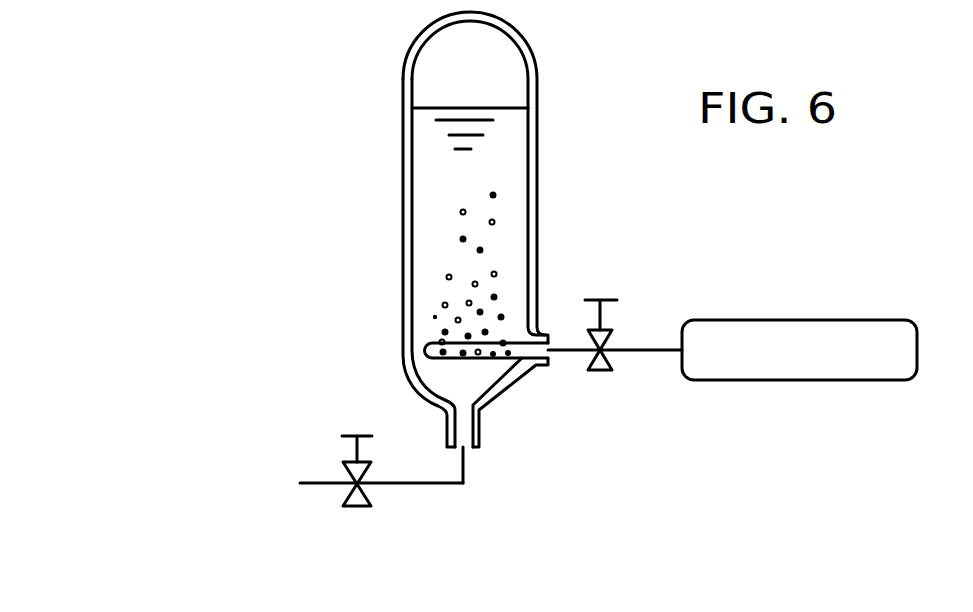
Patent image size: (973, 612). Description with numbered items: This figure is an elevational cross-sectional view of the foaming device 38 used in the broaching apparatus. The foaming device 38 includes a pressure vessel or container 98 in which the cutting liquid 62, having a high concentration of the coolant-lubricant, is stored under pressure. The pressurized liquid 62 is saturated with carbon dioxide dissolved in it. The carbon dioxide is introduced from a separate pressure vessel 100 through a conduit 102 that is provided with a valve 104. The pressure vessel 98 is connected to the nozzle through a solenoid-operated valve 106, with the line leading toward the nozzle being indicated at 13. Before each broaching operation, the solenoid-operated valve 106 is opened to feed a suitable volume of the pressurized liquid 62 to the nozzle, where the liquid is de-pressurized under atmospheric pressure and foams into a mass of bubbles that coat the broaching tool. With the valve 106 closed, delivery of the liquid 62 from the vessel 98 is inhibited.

The pressure vessel 98 is at (403, 98).
The cutting liquid 62 is at (432, 218).
The conduit 102 is at (645, 352).
The valve 104 is at (606, 297).
The pressure vessel 100 is at (795, 320).
The outlet pipe to nozzle 13 is at (405, 485).
The solenoid-operated valve 106 is at (357, 507).
The foaming device 38 is at (626, 431).